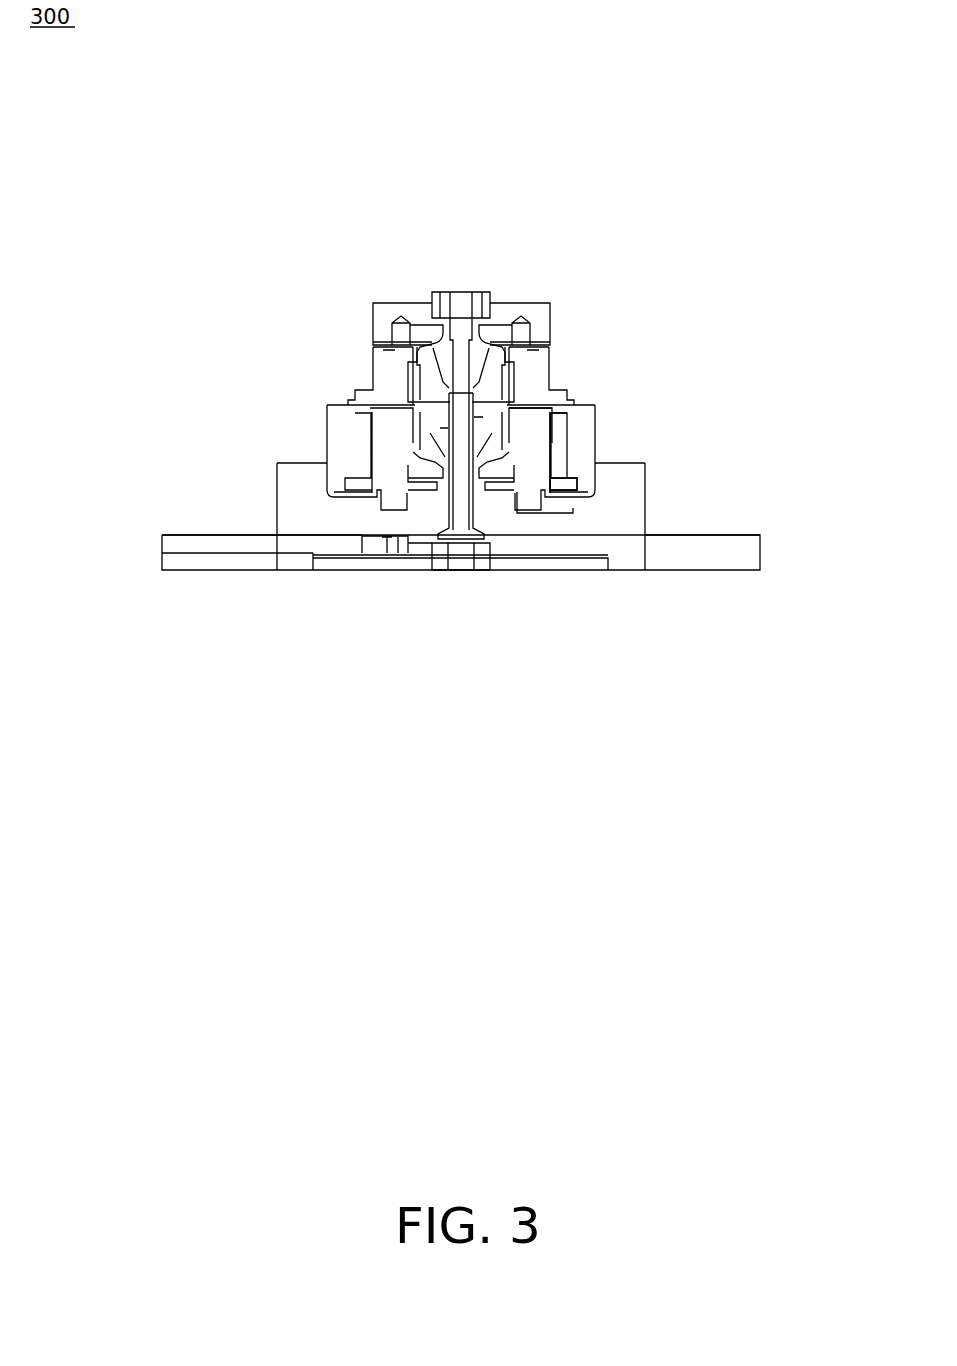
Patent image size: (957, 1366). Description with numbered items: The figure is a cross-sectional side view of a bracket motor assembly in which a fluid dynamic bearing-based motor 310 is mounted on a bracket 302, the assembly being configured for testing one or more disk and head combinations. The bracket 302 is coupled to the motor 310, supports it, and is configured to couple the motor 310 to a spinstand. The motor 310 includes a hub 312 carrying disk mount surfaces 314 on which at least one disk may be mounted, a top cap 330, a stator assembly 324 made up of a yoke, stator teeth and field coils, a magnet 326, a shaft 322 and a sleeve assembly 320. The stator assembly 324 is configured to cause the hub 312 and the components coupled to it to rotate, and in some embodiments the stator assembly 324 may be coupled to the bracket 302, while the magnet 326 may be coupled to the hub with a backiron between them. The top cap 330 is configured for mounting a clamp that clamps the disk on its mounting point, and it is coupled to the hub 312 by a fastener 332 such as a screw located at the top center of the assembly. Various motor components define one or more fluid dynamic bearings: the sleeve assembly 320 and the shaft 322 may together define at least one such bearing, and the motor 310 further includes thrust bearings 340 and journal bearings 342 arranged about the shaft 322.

The bracket 302 is at (277, 545).
The motor 310 is at (300, 393).
The hub 312 is at (385, 387).
The disk mount surfaces 314 is at (568, 394).
The sleeve assembly 320 is at (327, 405).
The shaft 322 is at (462, 447).
The stator assembly 324 is at (535, 475).
The magnet 326 is at (555, 480).
The top cap 330 is at (385, 310).
The fastener 332 is at (470, 290).
The thrust bearings 340 is at (440, 376).
The journal bearings 342 is at (383, 350).